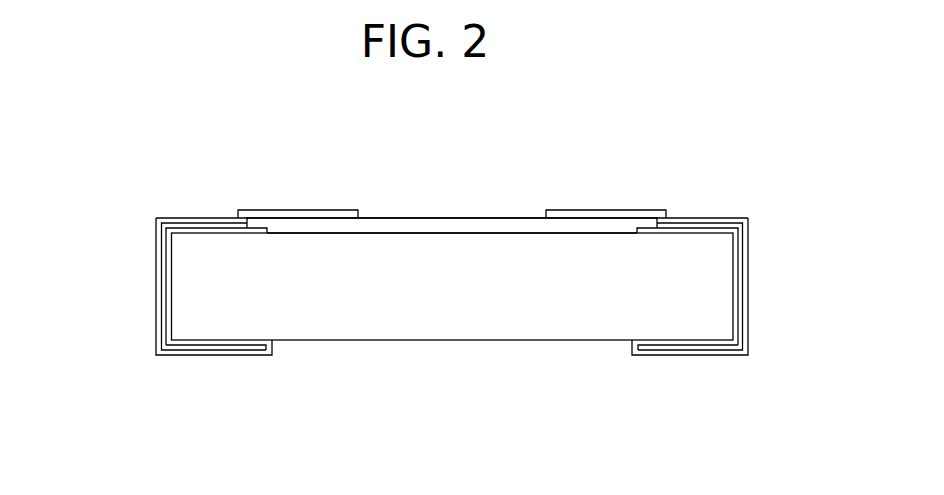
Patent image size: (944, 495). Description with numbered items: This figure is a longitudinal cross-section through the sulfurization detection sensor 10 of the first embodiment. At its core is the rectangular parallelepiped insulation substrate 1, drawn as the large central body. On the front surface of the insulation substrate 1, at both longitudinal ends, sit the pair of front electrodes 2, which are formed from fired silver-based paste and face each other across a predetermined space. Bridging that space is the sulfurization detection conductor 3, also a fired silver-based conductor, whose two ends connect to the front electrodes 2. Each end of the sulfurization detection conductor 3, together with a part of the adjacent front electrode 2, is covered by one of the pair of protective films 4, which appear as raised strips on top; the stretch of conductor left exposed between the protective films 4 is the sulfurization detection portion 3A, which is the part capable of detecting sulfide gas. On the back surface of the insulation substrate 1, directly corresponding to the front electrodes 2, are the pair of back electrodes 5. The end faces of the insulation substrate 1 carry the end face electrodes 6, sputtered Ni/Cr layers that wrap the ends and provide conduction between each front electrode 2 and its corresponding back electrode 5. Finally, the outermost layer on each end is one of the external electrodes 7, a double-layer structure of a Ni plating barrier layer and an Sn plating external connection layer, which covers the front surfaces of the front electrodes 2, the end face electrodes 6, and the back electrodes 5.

The sulfurization detection sensor 10 is at (748, 190).
The insulation substrate 1 is at (447, 340).
The front electrodes 2 is at (208, 226).
The sulfurization detection conductor 3 is at (512, 222).
The sulfurization detection portion 3A is at (433, 217).
The protective films 4 is at (323, 210).
The back electrodes 5 is at (228, 352).
The end face electrodes 6 is at (163, 255).
The external electrodes 7 is at (157, 305).